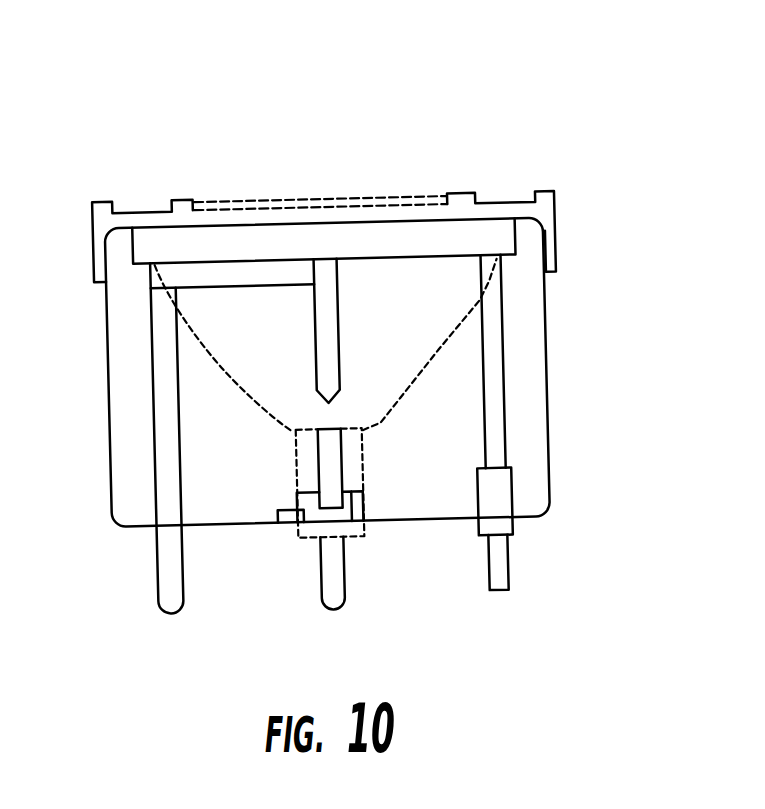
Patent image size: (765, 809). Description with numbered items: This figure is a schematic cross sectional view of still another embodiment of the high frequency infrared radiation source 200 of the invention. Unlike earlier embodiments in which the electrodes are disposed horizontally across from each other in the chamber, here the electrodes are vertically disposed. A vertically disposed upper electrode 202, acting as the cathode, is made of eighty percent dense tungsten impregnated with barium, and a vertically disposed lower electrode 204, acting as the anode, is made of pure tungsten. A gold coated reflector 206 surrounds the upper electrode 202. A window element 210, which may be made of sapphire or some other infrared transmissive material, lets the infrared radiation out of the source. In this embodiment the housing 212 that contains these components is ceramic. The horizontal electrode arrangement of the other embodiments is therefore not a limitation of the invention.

The infrared radiation source 200 is at (581, 82).
The upper electrode (cathode) 202 is at (335, 330).
The lower electrode (anode) 204 is at (338, 470).
The gold coated reflector 206 is at (434, 364).
The window element 210 is at (447, 243).
The housing 212 is at (534, 335).